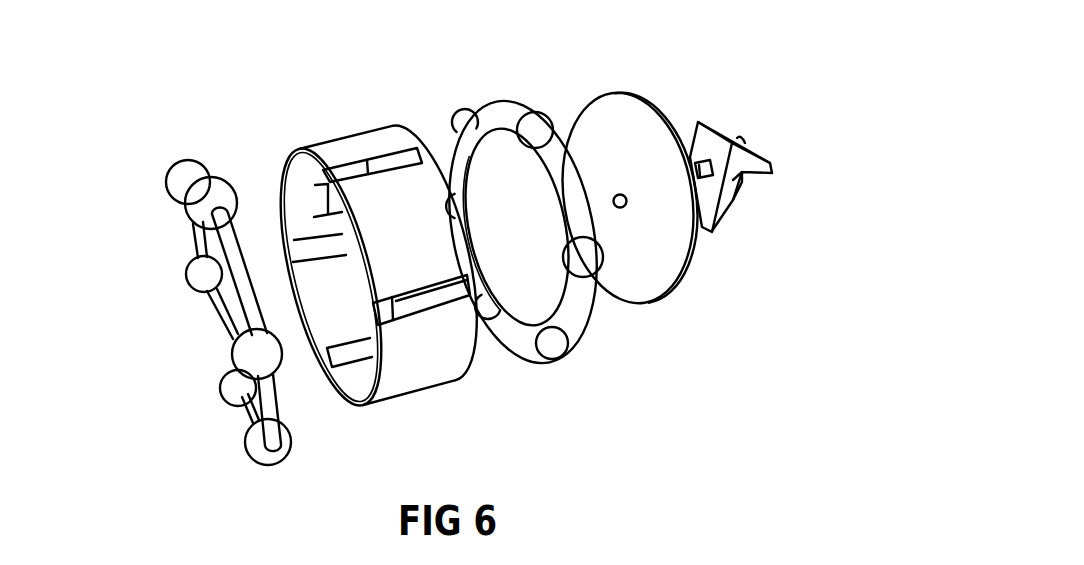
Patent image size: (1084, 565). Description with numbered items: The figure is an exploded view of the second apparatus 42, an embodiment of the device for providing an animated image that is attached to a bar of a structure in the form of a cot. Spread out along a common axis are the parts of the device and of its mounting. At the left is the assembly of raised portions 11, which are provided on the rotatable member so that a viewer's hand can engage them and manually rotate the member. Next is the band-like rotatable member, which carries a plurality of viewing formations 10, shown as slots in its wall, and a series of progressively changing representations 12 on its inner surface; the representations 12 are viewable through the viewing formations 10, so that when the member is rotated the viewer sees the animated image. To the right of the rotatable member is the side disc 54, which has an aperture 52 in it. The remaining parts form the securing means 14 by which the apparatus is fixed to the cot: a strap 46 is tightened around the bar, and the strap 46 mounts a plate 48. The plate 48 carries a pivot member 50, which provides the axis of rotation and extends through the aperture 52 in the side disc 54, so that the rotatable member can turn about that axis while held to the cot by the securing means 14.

The viewing formations 10 is at (377, 172).
The raised portions 11 is at (190, 210).
The progressively changing representations 12 is at (300, 207).
The securing means 14 is at (783, 240).
The second apparatus 42 is at (247, 98).
The strap 46 is at (750, 173).
The plate 48 is at (705, 200).
The pivot member 50 is at (707, 163).
The aperture 52 is at (619, 195).
The side disc 54 is at (637, 137).